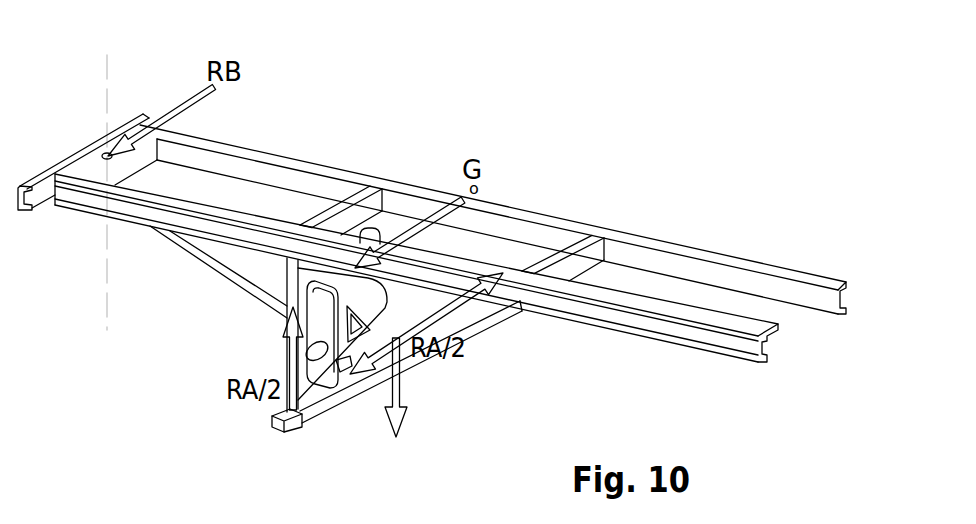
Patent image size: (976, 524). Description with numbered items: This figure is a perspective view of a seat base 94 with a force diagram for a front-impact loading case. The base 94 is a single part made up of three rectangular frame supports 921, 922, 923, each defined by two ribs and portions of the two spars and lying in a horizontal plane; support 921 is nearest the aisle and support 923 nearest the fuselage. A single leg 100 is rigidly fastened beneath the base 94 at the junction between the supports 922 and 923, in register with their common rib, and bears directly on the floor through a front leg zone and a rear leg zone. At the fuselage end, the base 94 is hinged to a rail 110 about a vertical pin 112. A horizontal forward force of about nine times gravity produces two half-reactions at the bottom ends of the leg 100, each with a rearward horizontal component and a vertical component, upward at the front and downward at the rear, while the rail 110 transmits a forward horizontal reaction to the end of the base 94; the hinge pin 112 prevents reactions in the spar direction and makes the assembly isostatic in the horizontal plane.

The base 94 is at (558, 214).
The support 921 is at (654, 258).
The support 922 is at (500, 223).
The support 923 is at (235, 166).
The leg 100 is at (292, 289).
The rail 110 is at (36, 178).
The vertical pin 112 is at (108, 68).